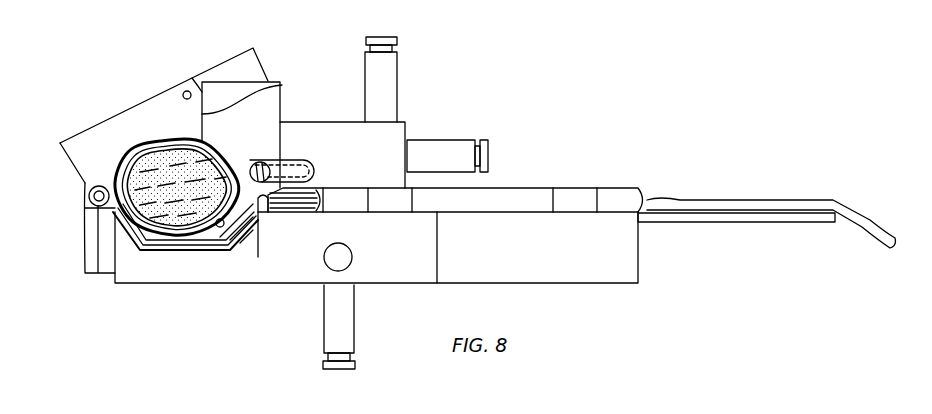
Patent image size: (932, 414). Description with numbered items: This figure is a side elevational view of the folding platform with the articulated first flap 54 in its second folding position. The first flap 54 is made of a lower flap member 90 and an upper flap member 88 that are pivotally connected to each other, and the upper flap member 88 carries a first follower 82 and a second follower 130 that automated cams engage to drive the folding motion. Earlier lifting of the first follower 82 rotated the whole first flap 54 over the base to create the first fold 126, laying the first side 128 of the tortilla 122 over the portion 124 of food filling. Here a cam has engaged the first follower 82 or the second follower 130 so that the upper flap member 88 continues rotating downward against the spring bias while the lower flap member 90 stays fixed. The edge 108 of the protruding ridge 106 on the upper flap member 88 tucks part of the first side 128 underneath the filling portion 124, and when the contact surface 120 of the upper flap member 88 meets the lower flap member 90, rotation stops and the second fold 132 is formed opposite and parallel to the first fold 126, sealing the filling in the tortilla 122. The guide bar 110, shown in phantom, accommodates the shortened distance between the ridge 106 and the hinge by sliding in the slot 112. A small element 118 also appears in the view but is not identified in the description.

The first flap 54 is at (219, 56).
The first follower 82 is at (440, 140).
The upper flap member 88 is at (402, 120).
The lower flap member 90 is at (67, 134).
The protruding ridge 106 is at (250, 220).
The edge 108 is at (223, 227).
The guide bar 110 is at (298, 157).
The slot 112 is at (277, 160).
The pivot pin 118 is at (190, 105).
The contact surface 120 is at (283, 85).
The tortilla 122 is at (870, 218).
The portion of food filling 124 is at (165, 235).
The first fold 126 is at (84, 178).
The first side 128 is at (168, 137).
The second follower 130 is at (378, 37).
The second fold 132 is at (207, 232).